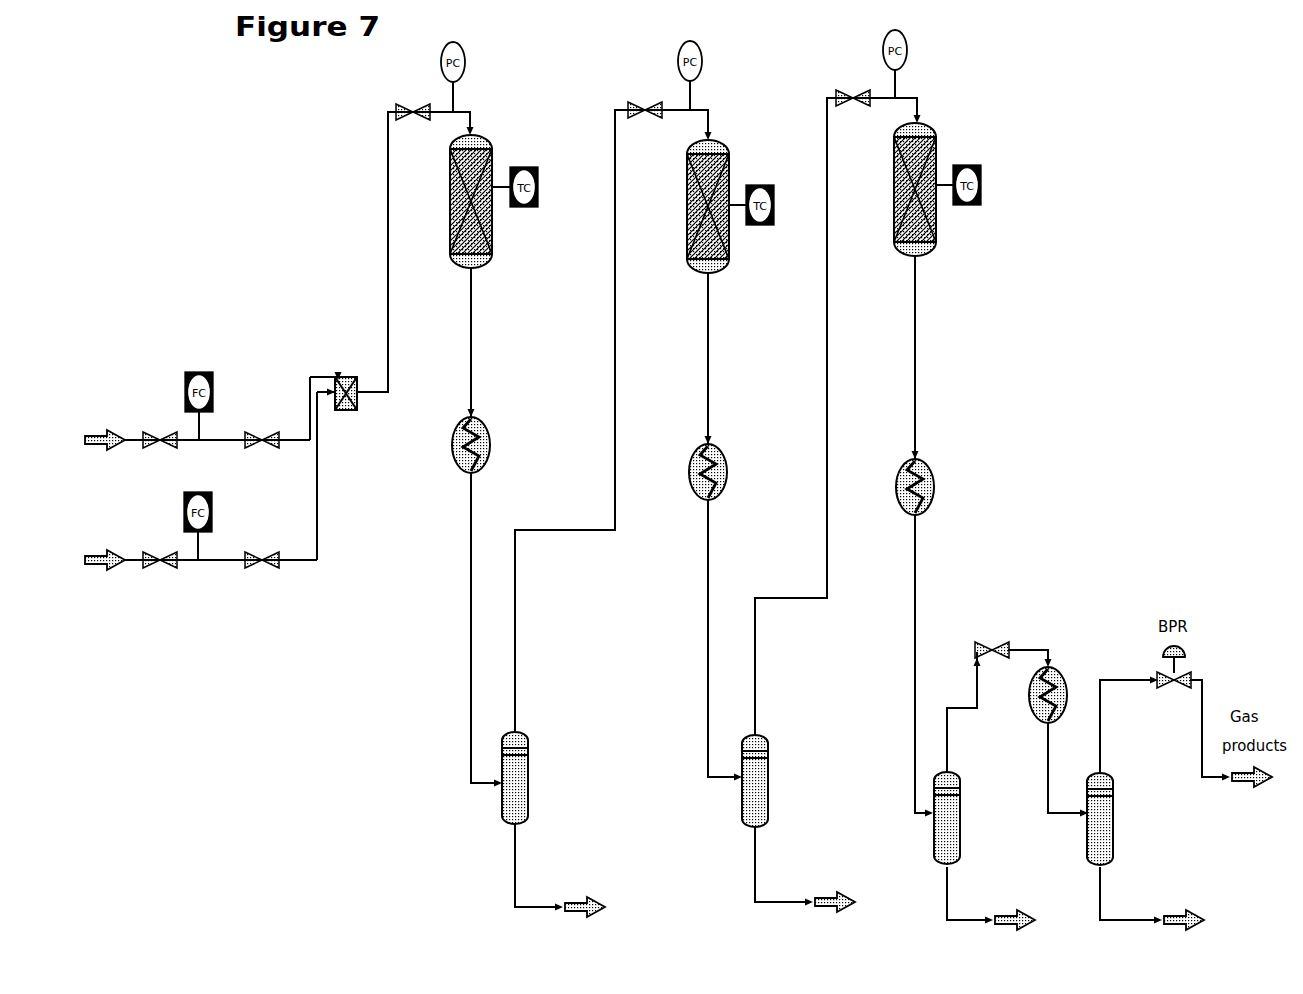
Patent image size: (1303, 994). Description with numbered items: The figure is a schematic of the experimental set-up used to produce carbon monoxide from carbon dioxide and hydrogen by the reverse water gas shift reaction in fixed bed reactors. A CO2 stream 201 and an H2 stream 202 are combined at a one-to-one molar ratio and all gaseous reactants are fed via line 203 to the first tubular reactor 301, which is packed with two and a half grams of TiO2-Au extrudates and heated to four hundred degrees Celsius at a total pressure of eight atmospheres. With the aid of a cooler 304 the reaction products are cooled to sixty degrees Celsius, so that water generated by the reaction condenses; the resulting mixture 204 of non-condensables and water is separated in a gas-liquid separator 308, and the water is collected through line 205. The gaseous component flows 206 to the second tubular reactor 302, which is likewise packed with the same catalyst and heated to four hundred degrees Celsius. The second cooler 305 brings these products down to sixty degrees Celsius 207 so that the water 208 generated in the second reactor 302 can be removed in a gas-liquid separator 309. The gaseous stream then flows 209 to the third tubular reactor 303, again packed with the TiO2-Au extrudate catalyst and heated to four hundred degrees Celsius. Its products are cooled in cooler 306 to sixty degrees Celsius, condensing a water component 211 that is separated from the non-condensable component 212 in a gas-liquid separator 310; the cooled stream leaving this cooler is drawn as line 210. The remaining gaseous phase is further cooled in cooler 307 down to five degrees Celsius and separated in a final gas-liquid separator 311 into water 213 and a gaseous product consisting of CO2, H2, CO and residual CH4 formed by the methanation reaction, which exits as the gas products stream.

The CO2 stream 201 is at (86, 419).
The H2 stream 202 is at (92, 541).
The line 203 is at (413, 248).
The mixture 204 is at (467, 630).
The line 205 is at (561, 870).
The gaseous component flow 206 is at (613, 417).
The cooled reaction products 207 is at (704, 640).
The water 208 is at (808, 869).
The gaseous stream 209 is at (838, 412).
The cooled effluent line to third gas-liquid separator 210 is at (907, 666).
The water component 211 is at (995, 898).
The non-condensable component 212 is at (993, 707).
The water 213 is at (1156, 898).
The first tubular reactor 301 is at (509, 173).
The second tubular reactor 302 is at (747, 185).
The third tubular reactor 303 is at (953, 173).
The cooler 304 is at (502, 430).
The second cooler 305 is at (738, 451).
The cooler 306 is at (946, 475).
The cooler 307 is at (1072, 651).
The gas-liquid separator 308 is at (556, 768).
The gas-liquid separator 309 is at (796, 773).
The gas-liquid separator 310 is at (988, 811).
The fourth gas-liquid separator 311 is at (1140, 794).